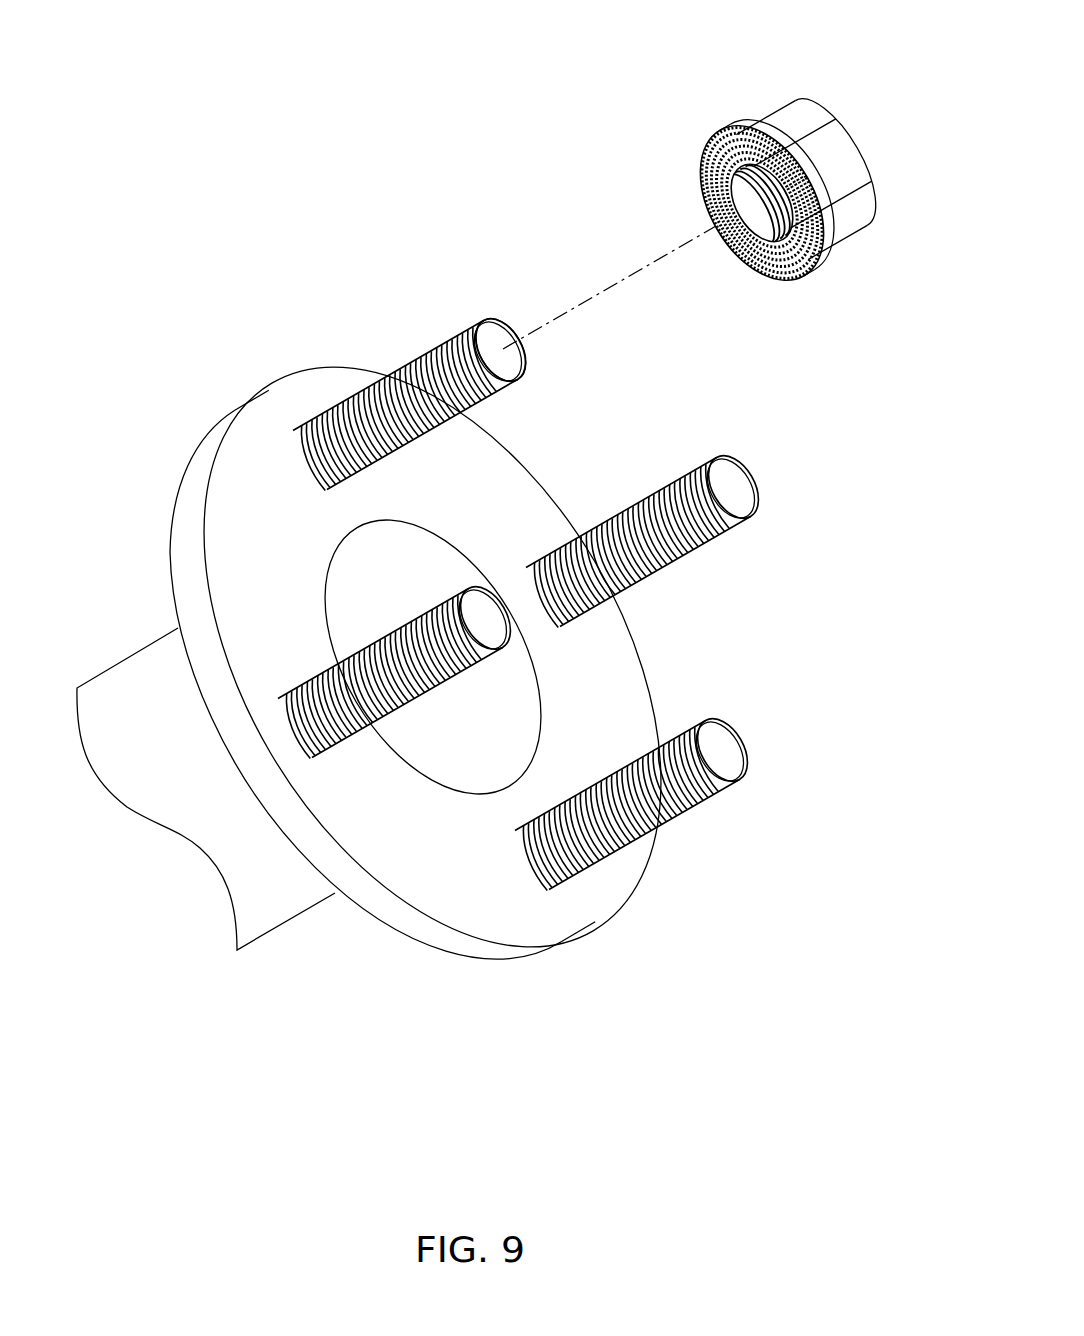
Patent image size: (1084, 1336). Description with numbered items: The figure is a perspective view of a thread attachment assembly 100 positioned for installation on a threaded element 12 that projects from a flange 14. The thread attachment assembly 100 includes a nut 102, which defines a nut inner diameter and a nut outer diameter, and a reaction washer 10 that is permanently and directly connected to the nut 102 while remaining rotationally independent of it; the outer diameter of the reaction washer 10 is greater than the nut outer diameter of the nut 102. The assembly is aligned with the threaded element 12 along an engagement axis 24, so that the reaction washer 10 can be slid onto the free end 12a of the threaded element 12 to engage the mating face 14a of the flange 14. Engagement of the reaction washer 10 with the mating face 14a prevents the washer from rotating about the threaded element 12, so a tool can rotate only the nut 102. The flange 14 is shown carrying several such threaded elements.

The thread attachment assembly 100 is at (799, 175).
The nut 102 is at (845, 180).
The reaction washer 10 is at (799, 215).
The engagement axis 24 is at (643, 267).
The threaded element 12 is at (413, 347).
The free end 12a is at (492, 322).
The flange 14 is at (416, 712).
The mating face 14a is at (478, 905).